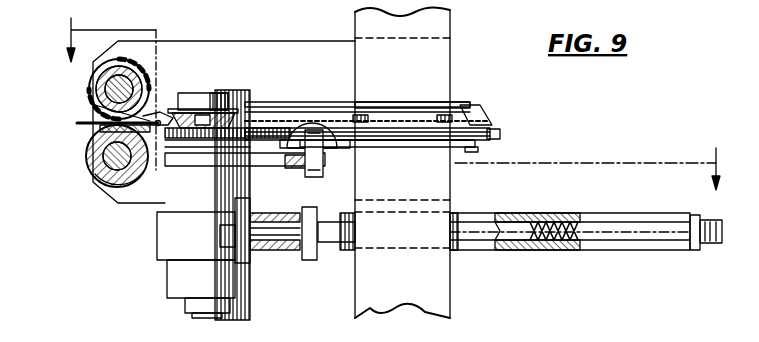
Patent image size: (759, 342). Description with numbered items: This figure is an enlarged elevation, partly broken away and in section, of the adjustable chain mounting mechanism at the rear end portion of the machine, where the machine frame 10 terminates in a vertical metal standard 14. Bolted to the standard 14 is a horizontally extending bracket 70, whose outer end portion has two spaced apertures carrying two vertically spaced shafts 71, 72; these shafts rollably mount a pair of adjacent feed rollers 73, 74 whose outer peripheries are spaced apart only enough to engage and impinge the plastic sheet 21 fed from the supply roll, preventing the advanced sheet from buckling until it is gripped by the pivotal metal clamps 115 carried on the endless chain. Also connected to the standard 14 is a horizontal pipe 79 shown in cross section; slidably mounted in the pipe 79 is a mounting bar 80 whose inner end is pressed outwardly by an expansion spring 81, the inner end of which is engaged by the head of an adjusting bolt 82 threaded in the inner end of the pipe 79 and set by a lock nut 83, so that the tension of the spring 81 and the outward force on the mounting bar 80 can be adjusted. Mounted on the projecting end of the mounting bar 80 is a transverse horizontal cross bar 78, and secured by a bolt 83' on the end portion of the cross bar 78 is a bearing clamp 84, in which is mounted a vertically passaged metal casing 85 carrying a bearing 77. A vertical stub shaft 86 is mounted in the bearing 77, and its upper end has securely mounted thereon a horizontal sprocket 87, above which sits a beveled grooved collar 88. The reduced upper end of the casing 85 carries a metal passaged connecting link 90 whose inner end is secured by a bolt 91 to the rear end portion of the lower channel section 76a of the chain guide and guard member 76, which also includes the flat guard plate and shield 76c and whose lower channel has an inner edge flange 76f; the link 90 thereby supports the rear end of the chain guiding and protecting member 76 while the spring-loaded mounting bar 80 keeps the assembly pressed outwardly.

The frame 10 is at (378, 106).
The vertical metal standard 14 is at (445, 67).
The plastic sheet 21 is at (78, 128).
The horizontally extending bracket 70 is at (268, 40).
The shaft 71 is at (90, 152).
The shaft 72 is at (97, 106).
The feed roller 73 is at (89, 91).
The feed roller 74 is at (96, 170).
The guide and guard member 76 is at (480, 127).
The lower channel section 76a is at (398, 148).
The flat guard plate and shield 76c is at (380, 102).
The inner edge flange 76f is at (466, 150).
The bearing 77 is at (185, 307).
The transverse horizontal cross bar 78 is at (308, 262).
The horizontal pipe 79 is at (485, 222).
The mounting bar 80 is at (312, 256).
The expansion spring 81 is at (540, 250).
The adjusting bolt 82 is at (712, 245).
The lock nut 83 is at (679, 246).
The bolt 83' is at (212, 236).
The bearing clamp 84 is at (165, 232).
The vertically passaged metal casing 85 is at (180, 274).
The vertical stub shaft 86 is at (215, 318).
The horizontal sprocket 87 is at (250, 125).
The beveled grooved collar 88 is at (173, 110).
The connecting link 90 is at (260, 166).
The bolt 91 is at (315, 172).
The pivotal metal clamp 115 is at (483, 93).